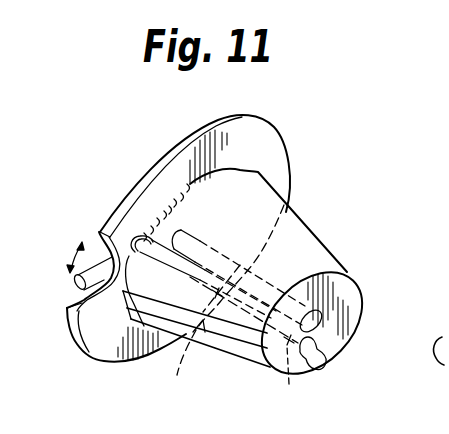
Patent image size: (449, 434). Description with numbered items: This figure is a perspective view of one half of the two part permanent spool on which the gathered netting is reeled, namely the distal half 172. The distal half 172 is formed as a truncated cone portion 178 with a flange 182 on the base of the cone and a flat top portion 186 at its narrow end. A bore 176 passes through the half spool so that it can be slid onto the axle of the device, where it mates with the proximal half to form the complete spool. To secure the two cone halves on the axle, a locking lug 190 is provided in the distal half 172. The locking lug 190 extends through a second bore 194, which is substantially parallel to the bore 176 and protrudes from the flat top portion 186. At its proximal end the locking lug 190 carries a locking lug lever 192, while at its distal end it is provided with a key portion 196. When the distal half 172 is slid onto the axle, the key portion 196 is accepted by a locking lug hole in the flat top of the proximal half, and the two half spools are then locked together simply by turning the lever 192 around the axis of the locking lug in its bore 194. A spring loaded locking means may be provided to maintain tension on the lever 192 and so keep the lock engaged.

The distal half 172 is at (238, 359).
The bore 176 is at (310, 320).
The truncated cone portion 178 is at (290, 243).
The flange 182 is at (266, 158).
The flat top portion 186 is at (348, 273).
The locking lug 190 is at (102, 262).
The locking lug lever 192 is at (74, 278).
The bore 194 is at (201, 300).
The key portion 196 is at (325, 356).